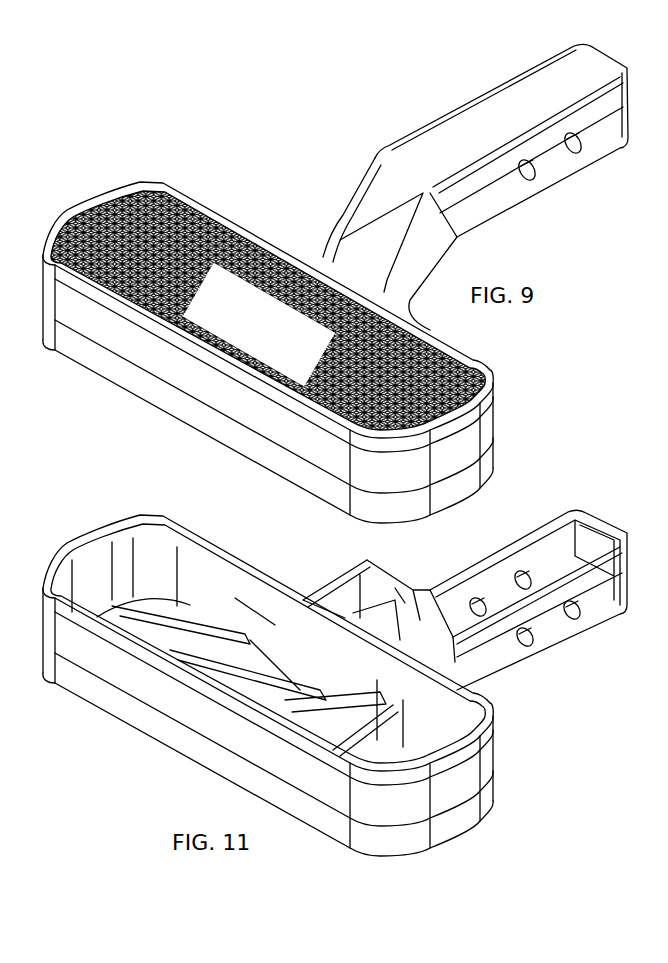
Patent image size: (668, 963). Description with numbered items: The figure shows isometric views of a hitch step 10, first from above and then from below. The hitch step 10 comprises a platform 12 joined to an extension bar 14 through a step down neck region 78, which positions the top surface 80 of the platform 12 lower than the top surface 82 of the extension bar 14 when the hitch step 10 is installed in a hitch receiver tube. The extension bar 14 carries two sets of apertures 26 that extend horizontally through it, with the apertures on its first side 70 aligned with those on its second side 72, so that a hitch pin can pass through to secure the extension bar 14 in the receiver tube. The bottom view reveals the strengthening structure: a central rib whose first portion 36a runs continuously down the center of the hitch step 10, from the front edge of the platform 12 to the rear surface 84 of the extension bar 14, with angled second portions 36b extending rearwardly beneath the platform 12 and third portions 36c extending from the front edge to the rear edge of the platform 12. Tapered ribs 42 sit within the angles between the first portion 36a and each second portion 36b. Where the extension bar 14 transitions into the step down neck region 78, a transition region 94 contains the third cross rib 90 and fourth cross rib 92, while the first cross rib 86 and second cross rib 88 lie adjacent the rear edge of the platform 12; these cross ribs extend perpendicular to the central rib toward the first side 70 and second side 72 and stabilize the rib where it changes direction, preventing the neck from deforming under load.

In FIG. 9, the hitch step 10 is at (435, 137).
In FIG. 9, the platform 12 is at (485, 368).
In FIG. 9, the extension bar 14 is at (483, 110).
In FIG. 9, the apertures 26 is at (530, 182).
In FIG. 11, the apertures 26 is at (578, 618).
In FIG. 11, the first portion of rib 36a is at (277, 687).
In FIG. 11, the second portions of rib 36b is at (317, 717).
In FIG. 11, the third portions of rib 36c is at (358, 838).
In FIG. 11, the ribs 42 is at (278, 632).
In FIG. 9, the first side of extension bar 70 is at (546, 47).
In FIG. 11, the first side of extension bar 70 is at (547, 647).
In FIG. 9, the second side of extension bar 72 is at (563, 173).
In FIG. 11, the second side of extension bar 72 is at (493, 572).
In FIG. 9, the step down neck region 78 is at (367, 217).
In FIG. 9, the top surface of platform 80 is at (437, 347).
In FIG. 9, the top surface of extension bar 82 is at (533, 87).
In FIG. 11, the rear surface of extension bar 84 is at (2, 728).
In FIG. 11, the first cross rib 86 is at (474, 659).
In FIG. 11, the second cross rib 88 is at (441, 595).
In FIG. 11, the third cross rib 90 is at (400, 590).
In FIG. 11, the fourth cross rib 92 is at (353, 613).
In FIG. 9, the transition region 94 is at (383, 167).